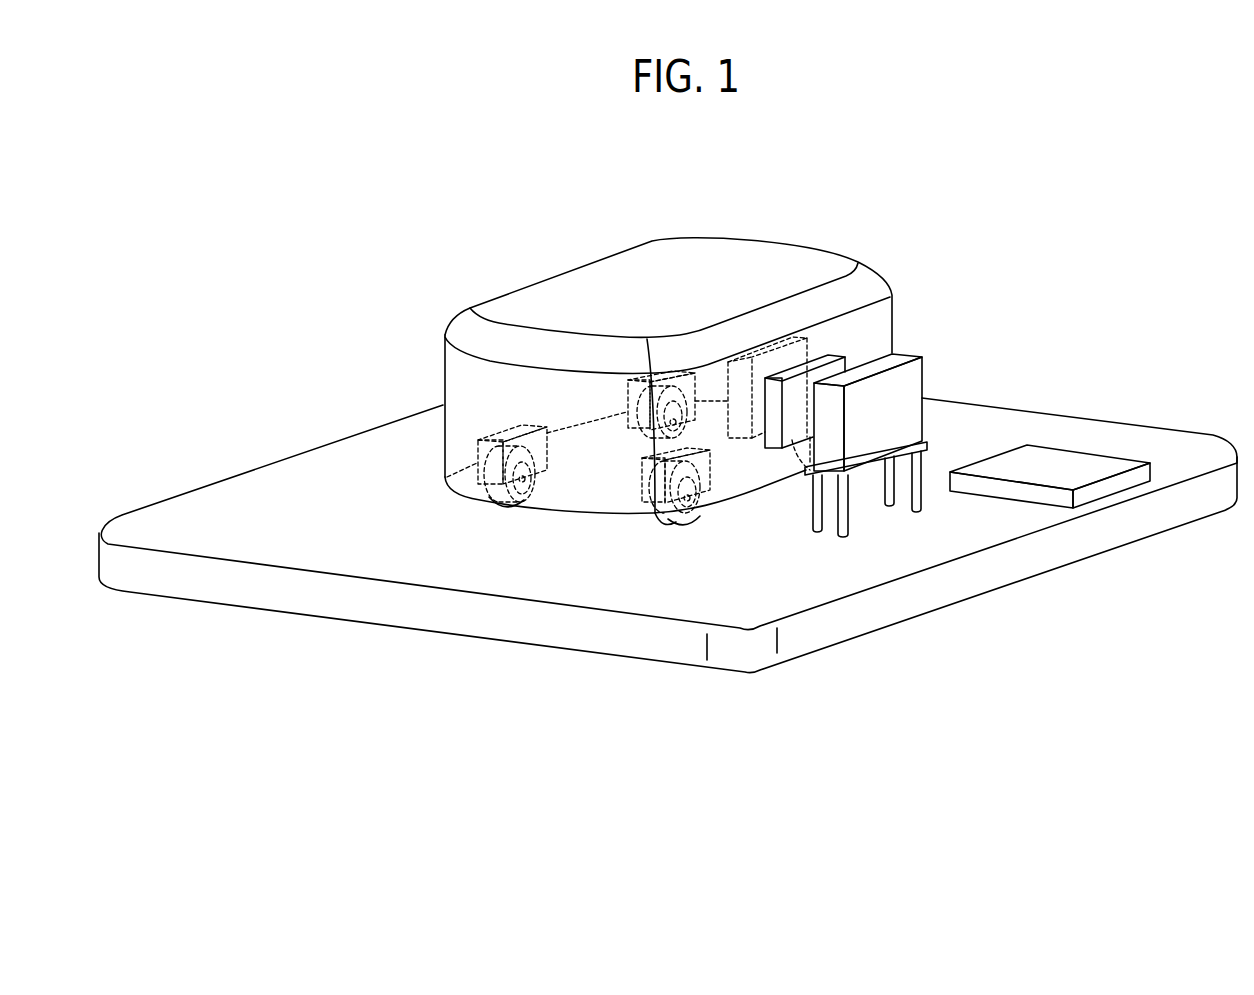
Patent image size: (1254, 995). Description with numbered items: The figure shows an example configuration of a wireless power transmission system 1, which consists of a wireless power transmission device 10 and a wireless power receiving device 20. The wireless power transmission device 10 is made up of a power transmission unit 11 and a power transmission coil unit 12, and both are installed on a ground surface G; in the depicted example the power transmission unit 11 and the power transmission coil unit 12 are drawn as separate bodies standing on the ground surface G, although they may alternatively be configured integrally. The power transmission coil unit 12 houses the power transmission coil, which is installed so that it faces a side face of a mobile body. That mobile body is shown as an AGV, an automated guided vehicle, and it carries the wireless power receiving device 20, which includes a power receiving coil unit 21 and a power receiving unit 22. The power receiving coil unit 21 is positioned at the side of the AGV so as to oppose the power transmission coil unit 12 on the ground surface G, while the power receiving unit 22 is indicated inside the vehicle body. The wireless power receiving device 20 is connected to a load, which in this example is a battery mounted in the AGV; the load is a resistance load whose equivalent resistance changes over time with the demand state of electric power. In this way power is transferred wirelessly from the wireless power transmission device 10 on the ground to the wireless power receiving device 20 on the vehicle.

The wireless power transmission system 1 is at (388, 284).
The wireless power transmission device 10 is at (668, 509).
The power transmission unit 11 is at (1137, 460).
The power transmission coil unit 12 is at (922, 380).
The wireless power receiving device 20 is at (747, 459).
The power receiving coil unit 21 is at (770, 449).
The power receiving unit 22 is at (730, 438).
The automated guided vehicle AGV is at (882, 323).
The ground surface G is at (1092, 433).